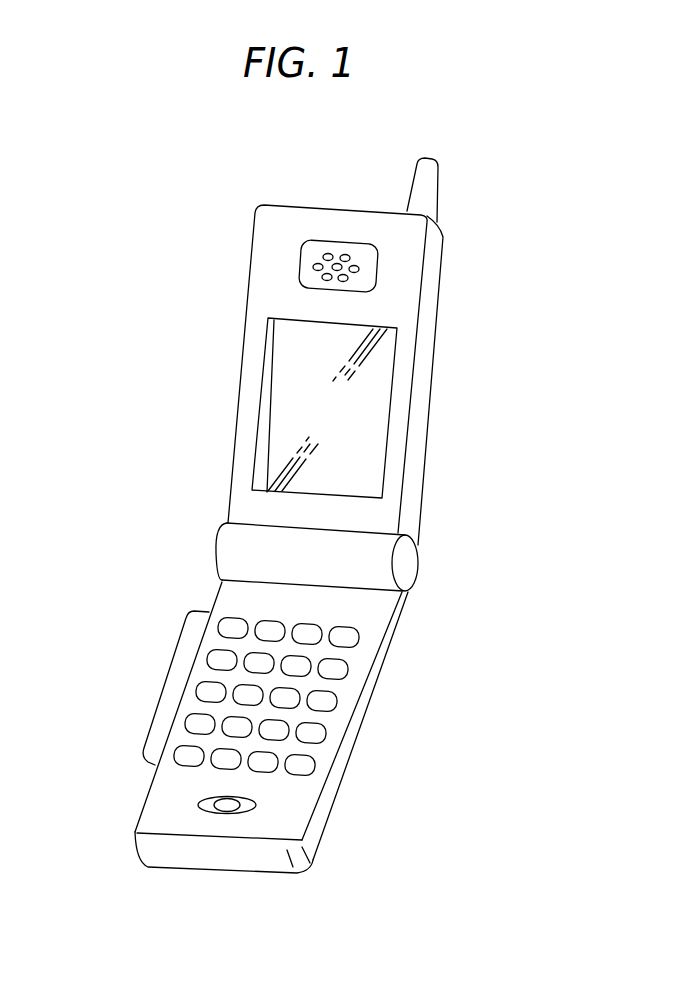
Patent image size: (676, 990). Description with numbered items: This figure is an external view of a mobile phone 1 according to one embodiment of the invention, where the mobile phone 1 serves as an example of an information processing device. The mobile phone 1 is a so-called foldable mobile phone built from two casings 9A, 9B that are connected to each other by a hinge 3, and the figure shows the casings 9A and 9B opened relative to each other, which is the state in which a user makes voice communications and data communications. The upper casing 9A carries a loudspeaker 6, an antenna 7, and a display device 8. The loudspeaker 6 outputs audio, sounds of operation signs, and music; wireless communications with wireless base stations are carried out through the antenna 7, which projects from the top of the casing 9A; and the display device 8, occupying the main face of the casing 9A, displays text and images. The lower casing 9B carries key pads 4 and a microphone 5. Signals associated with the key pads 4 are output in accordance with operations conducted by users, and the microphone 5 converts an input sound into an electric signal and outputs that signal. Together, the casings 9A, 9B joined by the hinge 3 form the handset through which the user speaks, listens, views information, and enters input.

The mobile phone 1 is at (172, 550).
The hinge 3 is at (402, 563).
The key pads 4 is at (178, 668).
The microphone 5 is at (220, 806).
The loudspeaker 6 is at (308, 272).
The antenna 7 is at (423, 187).
The display device 8 is at (282, 410).
The casing 9A is at (437, 322).
The casing 9B is at (325, 793).